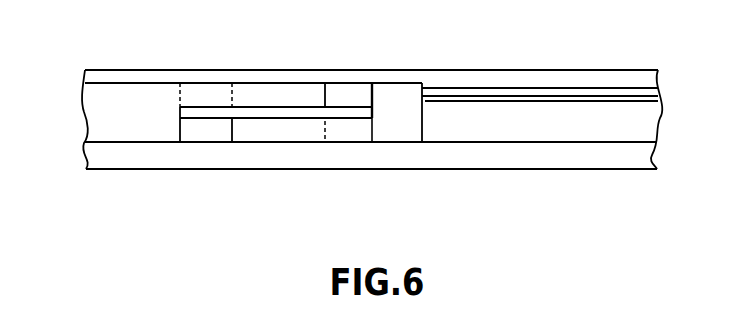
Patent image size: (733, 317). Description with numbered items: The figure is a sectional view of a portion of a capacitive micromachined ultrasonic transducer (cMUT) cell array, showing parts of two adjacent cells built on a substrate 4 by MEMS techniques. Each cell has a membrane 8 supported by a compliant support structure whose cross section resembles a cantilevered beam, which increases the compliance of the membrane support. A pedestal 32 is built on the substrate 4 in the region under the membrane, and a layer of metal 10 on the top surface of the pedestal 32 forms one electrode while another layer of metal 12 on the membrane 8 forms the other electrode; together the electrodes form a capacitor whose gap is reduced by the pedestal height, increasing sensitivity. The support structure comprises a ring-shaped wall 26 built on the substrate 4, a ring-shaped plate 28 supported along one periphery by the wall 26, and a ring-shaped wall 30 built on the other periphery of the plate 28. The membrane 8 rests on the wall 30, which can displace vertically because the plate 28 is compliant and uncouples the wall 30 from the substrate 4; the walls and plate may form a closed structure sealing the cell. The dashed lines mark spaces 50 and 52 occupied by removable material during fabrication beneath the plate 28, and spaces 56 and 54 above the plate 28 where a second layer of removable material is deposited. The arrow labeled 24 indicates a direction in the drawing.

The substrate 4 is at (655, 162).
The membrane 8 is at (232, 73).
The layer of metal 10 is at (640, 99).
The layer of metal 12 is at (467, 88).
The flow direction arrow 24 is at (125, 111).
The wall 26 is at (180, 132).
The plate 28 is at (302, 122).
The wall 30 is at (325, 98).
The pedestal 32 is at (560, 112).
The space 50 is at (263, 133).
The space 52 is at (350, 133).
The space 54 is at (283, 87).
The space 56 is at (210, 87).